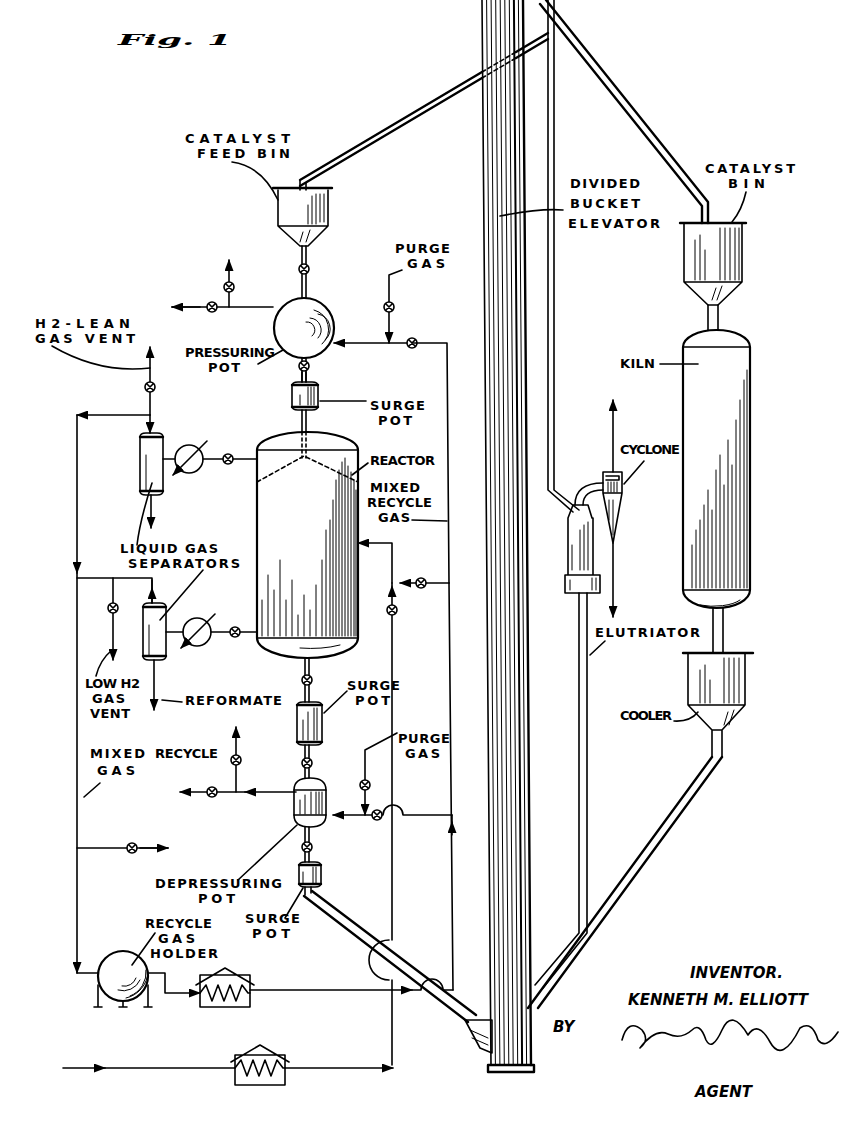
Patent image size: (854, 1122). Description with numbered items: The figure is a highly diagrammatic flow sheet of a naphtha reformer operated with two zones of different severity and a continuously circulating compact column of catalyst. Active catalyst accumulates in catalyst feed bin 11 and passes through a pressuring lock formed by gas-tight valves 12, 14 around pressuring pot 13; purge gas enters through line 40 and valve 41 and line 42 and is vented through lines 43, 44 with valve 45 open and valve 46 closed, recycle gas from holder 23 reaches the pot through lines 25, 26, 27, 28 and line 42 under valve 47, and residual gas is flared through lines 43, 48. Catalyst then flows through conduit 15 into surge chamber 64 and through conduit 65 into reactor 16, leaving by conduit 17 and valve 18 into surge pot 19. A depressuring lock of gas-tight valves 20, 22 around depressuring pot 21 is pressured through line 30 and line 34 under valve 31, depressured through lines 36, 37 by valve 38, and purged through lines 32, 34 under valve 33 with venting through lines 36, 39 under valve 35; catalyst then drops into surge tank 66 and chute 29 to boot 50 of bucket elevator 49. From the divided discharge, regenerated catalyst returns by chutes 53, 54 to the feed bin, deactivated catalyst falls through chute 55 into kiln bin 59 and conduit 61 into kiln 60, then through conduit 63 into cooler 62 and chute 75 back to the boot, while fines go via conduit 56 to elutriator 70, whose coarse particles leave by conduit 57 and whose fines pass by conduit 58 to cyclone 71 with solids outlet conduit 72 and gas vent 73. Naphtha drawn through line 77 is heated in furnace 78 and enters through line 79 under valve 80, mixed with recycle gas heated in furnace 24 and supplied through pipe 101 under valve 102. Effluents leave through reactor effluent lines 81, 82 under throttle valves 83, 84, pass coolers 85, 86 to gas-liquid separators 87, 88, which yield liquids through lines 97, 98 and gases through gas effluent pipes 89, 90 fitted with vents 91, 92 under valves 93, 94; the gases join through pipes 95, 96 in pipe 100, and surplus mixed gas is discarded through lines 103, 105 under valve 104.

The catalyst feed bin 11 is at (330, 208).
The gas-tight valve 12 is at (310, 270).
The pressuring pot 13 is at (320, 306).
The gas-tight valve 14 is at (310, 367).
The conduit 15 is at (300, 379).
The reactor 16 is at (257, 526).
The conduit 17 is at (310, 667).
The valve 18 is at (312, 682).
The surge pot 19 is at (322, 722).
The gas-tight valve 20 is at (312, 764).
The depressuring pot 21 is at (296, 810).
The gas-tight valve 22 is at (302, 848).
The holder 23 is at (112, 952).
The furnace 24 is at (232, 972).
The line 25 is at (194, 996).
The line 26 is at (320, 990).
The line 27 is at (455, 688).
The line 28 is at (446, 380).
The chute 29 is at (462, 1012).
The line 30 is at (450, 812).
The valve 31 is at (378, 822).
The line 32 is at (368, 754).
The valve 33 is at (371, 786).
The line 34 is at (360, 814).
The valve 35 is at (243, 762).
The line 36 is at (253, 792).
The line 37 is at (215, 798).
The valve 38 is at (216, 788).
The line 39 is at (236, 743).
The line 40 is at (389, 322).
The valve 41 is at (395, 305).
The line 42 is at (367, 342).
The line 43 is at (270, 306).
The line 44 is at (231, 272).
The valve 45 is at (236, 289).
The valve 46 is at (212, 312).
The valve 47 is at (410, 349).
The line 48 is at (201, 300).
The bucket elevator 49 is at (488, 748).
The boot 50 is at (533, 1050).
The chute 53 is at (419, 98).
The chute 54 is at (530, 52).
The chute 55 is at (598, 60).
The conduit 56 is at (556, 287).
The conduit 57 is at (592, 752).
The conduit 58 is at (590, 480).
The kiln bin 59 is at (746, 250).
The kiln 60 is at (684, 386).
The conduit 61 is at (722, 318).
The cooler 62 is at (686, 672).
The conduit 63 is at (725, 631).
The surge chamber 64 is at (320, 392).
The conduit 65 is at (309, 416).
The surge tank 66 is at (322, 870).
The elutriator 70 is at (568, 550).
The cyclone 71 is at (624, 485).
The conduit 72 is at (615, 575).
The vent 73 is at (615, 433).
The chute 75 is at (665, 818).
The line 77 is at (150, 1068).
The furnace 78 is at (235, 1080).
The line 79 is at (395, 697).
The valve 80 is at (398, 617).
The reactor effluent line 81 is at (250, 456).
The reactor effluent line 82 is at (250, 628).
The throttle valve 83 is at (230, 466).
The throttle valve 84 is at (237, 641).
The cooler 85 is at (182, 447).
The cooler 86 is at (187, 620).
The gas-liquid separator 87 is at (140, 461).
The gas-liquid separator 88 is at (143, 635).
The gas effluent pipe 89 is at (160, 416).
The gas effluent pipe 90 is at (160, 588).
The vent 91 is at (152, 365).
The vent 92 is at (113, 645).
The valve 93 is at (158, 388).
The valve 94 is at (113, 609).
The pipe 95 is at (120, 412).
The pipe 96 is at (88, 577).
The line 97 is at (158, 516).
The line 98 is at (158, 690).
The pipe 100 is at (80, 512).
The pipe 101 is at (438, 594).
The valve 102 is at (428, 578).
The line 103 is at (120, 848).
The valve 104 is at (130, 855).
The line 105 is at (146, 850).